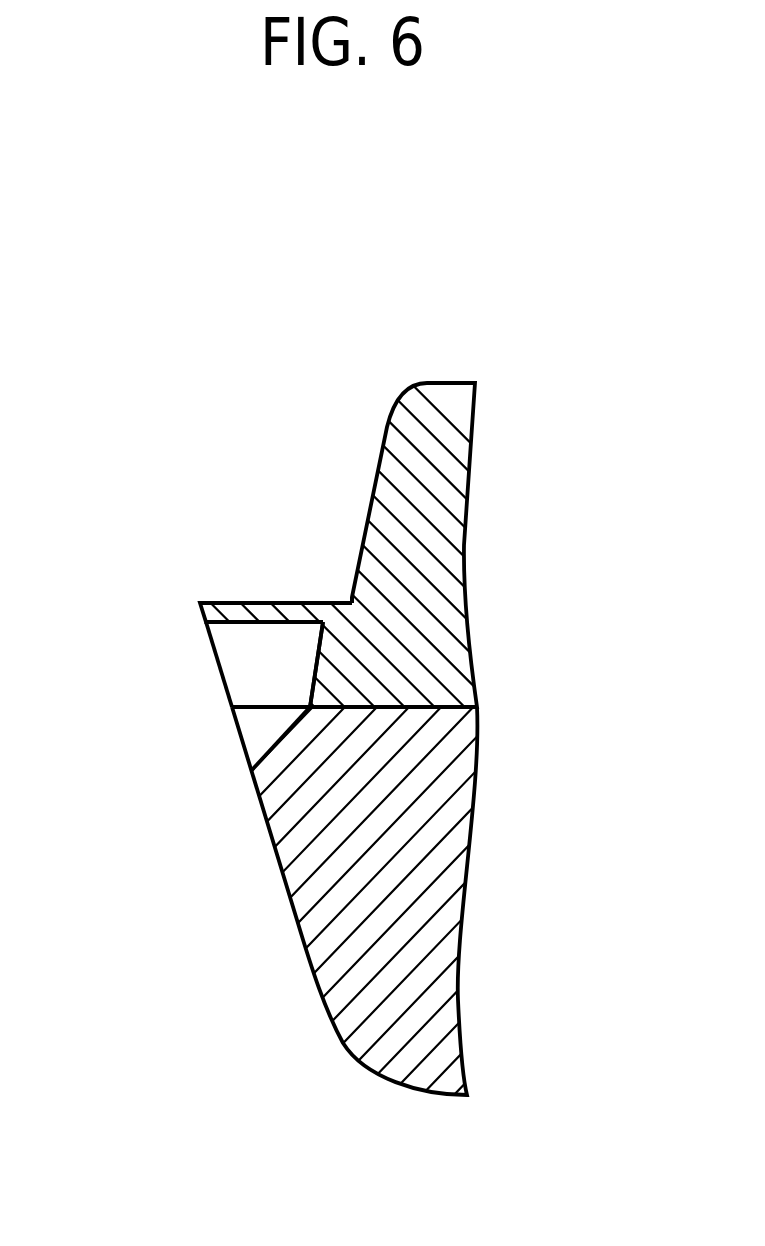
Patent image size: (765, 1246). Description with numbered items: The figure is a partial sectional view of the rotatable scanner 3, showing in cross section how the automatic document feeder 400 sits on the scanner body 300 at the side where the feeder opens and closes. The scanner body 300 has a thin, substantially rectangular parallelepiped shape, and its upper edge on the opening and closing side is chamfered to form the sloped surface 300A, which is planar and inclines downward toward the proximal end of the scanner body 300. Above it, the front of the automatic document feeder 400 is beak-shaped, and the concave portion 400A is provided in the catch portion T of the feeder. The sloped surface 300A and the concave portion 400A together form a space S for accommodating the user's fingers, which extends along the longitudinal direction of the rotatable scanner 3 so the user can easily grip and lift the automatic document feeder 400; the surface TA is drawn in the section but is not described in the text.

The rotatable scanner 3 is at (174, 414).
The automatic document feeder 400 is at (447, 566).
The concave portion 400A is at (318, 643).
The catch portion T is at (316, 613).
The tip surface TA is at (207, 640).
The space S is at (243, 674).
The sloped surface 300A is at (267, 746).
The scanner body 300 is at (445, 883).